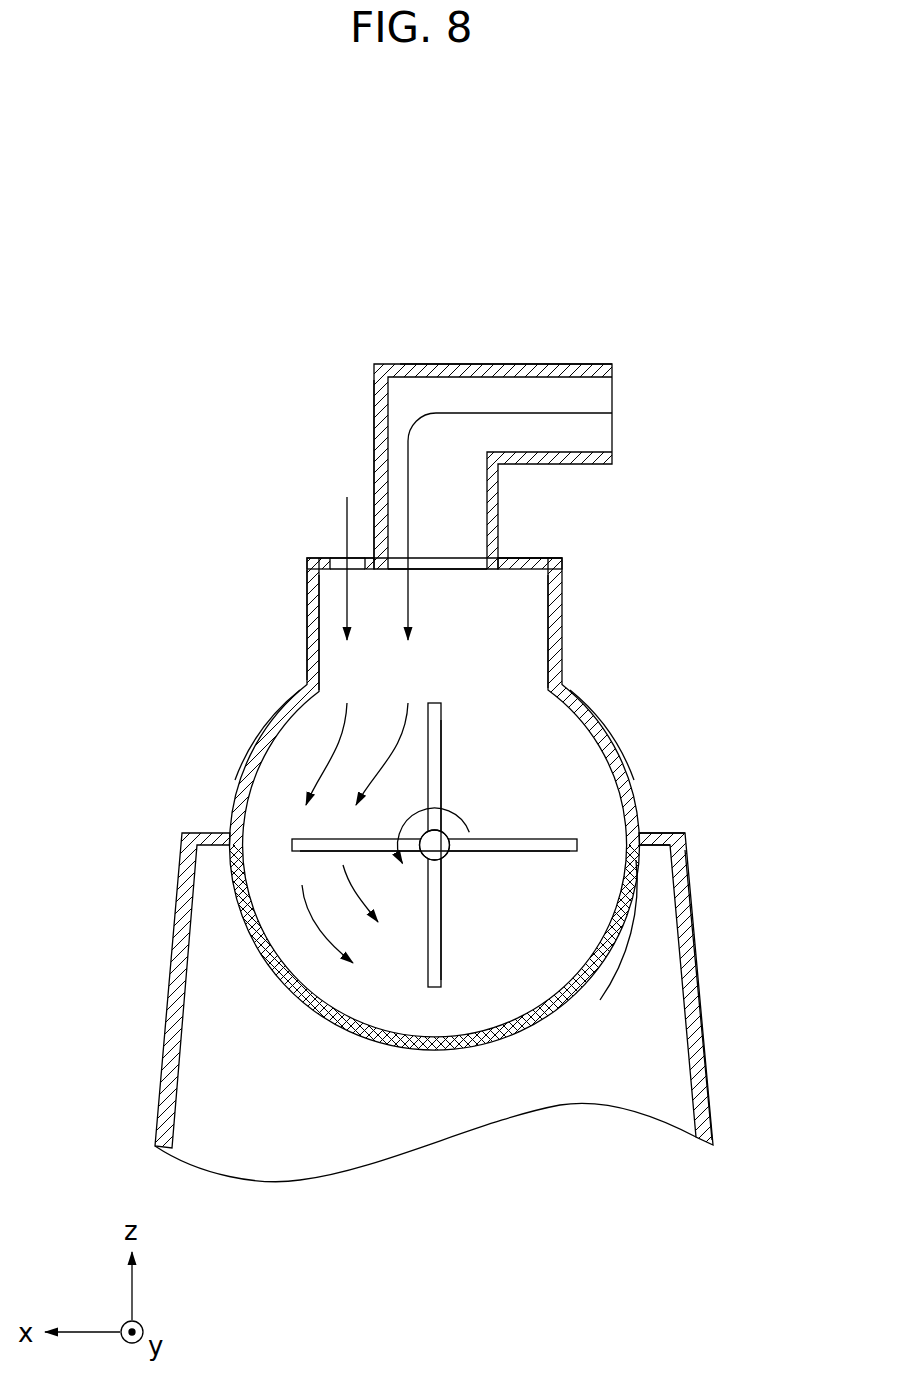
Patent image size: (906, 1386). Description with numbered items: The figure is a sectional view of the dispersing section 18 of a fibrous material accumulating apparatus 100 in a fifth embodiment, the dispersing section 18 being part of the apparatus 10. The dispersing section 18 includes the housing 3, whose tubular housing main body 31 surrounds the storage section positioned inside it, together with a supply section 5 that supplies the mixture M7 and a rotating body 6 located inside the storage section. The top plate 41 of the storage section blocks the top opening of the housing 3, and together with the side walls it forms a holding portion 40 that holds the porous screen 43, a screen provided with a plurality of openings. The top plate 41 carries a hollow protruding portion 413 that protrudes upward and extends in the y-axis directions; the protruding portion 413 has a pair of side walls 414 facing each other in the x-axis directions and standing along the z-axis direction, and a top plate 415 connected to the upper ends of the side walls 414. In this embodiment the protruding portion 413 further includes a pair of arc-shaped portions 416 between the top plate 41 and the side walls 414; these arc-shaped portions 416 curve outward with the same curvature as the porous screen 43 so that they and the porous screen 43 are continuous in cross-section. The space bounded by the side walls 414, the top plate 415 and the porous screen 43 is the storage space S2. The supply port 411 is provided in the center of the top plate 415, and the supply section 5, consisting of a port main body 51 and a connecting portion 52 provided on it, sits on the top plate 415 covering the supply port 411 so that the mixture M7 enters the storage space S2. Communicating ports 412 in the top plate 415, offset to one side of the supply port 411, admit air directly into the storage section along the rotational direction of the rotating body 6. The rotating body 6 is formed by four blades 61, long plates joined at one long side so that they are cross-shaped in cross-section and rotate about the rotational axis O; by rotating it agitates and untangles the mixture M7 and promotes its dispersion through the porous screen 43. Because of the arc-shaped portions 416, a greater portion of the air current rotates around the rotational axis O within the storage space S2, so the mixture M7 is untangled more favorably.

The liquid ejecting system 100 is at (518, 148).
The liquid ejecting apparatus 10 is at (199, 276).
The dispersing section 18 is at (694, 278).
The supply section 5 is at (410, 360).
The port main body 51 is at (374, 422).
The connecting portion 52 is at (585, 362).
The mixture M7 is at (492, 411).
The holding portion 40 is at (618, 733).
The top plate 41 is at (660, 832).
The supply port 411 is at (470, 558).
The communicating ports 412 is at (343, 557).
The protruding portion 413 is at (303, 631).
The side walls 414 is at (313, 660).
The top plate 415 is at (546, 556).
The arc-shaped portions 416 is at (244, 750).
The housing 3 is at (712, 1067).
The housing main body 31 is at (701, 980).
The porous screen 43 is at (639, 900).
The storage space S2 is at (519, 678).
The rotating body 6 is at (420, 968).
The blades 61 is at (442, 945).
The rotational axis O is at (440, 850).